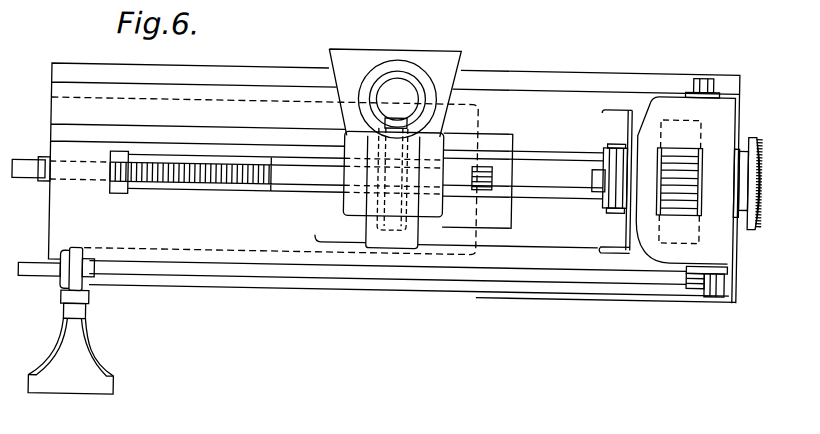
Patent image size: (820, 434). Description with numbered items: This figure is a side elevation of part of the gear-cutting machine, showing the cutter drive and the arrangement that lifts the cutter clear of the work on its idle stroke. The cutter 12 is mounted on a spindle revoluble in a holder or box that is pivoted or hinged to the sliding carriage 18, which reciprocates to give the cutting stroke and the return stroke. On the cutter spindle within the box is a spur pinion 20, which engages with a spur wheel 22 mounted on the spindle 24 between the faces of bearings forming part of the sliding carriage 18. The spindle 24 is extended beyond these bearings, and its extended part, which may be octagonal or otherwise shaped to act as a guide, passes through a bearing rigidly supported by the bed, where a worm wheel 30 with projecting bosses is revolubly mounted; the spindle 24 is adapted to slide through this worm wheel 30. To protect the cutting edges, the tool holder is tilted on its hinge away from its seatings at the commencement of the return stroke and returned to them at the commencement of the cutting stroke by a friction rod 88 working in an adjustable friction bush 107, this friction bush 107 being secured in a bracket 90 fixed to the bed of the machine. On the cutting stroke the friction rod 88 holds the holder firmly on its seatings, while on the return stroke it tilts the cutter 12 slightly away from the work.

The cutter 12 is at (767, 160).
The sliding carriage 18 is at (661, 279).
The spur pinion 20 is at (692, 160).
The spur wheel 22 is at (701, 120).
The spindle 24 is at (289, 163).
The worm wheel 30 is at (383, 226).
The friction rod 88 is at (471, 264).
The bracket 90 is at (82, 350).
The friction bush 107 is at (94, 271).